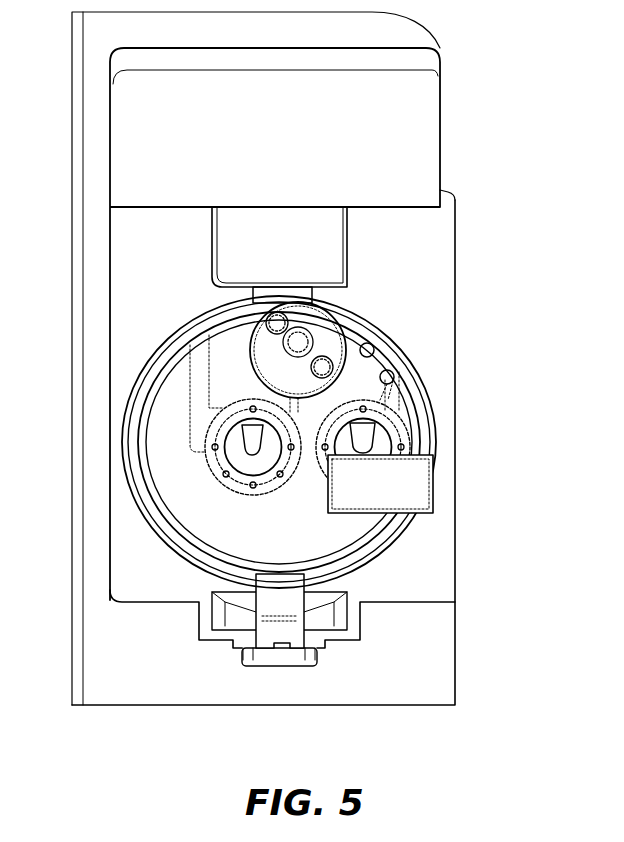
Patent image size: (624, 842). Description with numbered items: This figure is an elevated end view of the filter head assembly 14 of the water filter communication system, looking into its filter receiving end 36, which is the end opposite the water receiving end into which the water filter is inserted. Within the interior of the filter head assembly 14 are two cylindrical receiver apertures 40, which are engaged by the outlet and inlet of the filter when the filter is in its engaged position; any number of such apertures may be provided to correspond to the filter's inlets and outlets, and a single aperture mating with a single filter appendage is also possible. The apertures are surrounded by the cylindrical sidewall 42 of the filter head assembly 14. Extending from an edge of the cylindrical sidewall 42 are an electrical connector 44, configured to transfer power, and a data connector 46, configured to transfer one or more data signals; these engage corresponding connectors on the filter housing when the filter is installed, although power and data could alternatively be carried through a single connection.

The filter head assembly 14 is at (508, 232).
The filter receiving end 36 is at (413, 707).
The cylindrical receiver aperture 40 is at (235, 443).
The cylindrical sidewall 42 is at (147, 450).
The electrical connector 44 is at (366, 345).
The data connector 46 is at (392, 374).